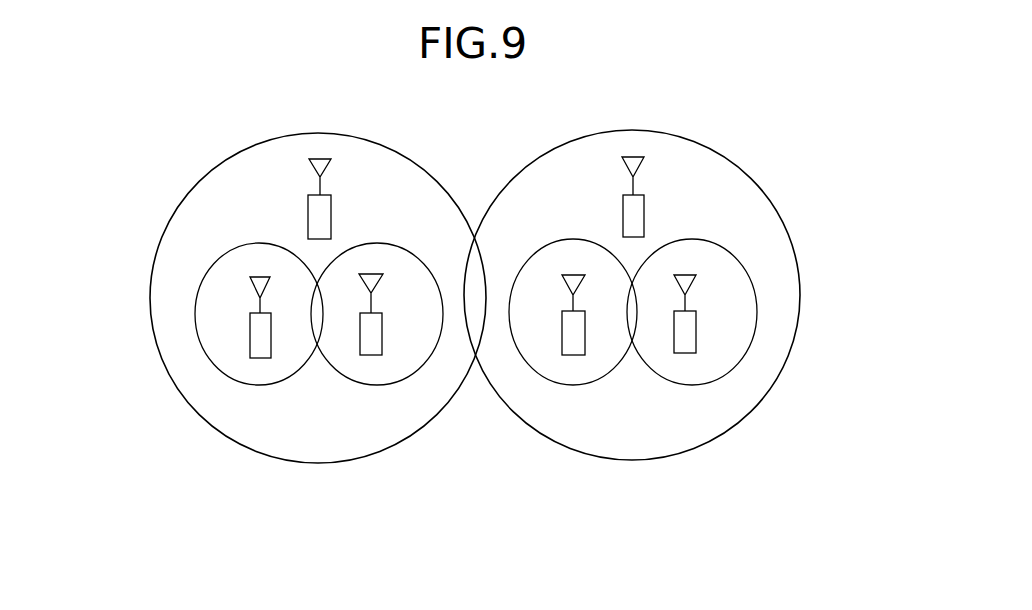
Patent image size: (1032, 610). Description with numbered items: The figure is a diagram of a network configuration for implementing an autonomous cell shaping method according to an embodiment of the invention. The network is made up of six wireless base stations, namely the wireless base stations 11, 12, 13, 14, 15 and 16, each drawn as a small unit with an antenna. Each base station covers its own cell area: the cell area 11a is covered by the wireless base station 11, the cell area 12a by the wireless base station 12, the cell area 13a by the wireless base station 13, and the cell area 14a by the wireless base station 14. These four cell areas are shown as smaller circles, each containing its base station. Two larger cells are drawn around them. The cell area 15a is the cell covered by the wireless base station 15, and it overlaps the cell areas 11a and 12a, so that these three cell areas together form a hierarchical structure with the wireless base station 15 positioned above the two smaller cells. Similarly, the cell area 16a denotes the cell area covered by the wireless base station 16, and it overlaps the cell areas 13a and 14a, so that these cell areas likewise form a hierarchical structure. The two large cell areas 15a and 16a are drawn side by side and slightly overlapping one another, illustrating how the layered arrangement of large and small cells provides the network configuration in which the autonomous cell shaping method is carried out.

The wireless base station 11 is at (257, 323).
The wireless base station 12 is at (368, 335).
The wireless base station 13 is at (568, 320).
The wireless base station 14 is at (693, 332).
The wireless base station 15 is at (325, 209).
The wireless base station 16 is at (643, 210).
The cell area 11a is at (210, 278).
The cell area 12a is at (380, 378).
The cell area 13a is at (558, 253).
The cell area 14a is at (727, 267).
The cell area 15a is at (308, 452).
The cell area 16a is at (652, 445).